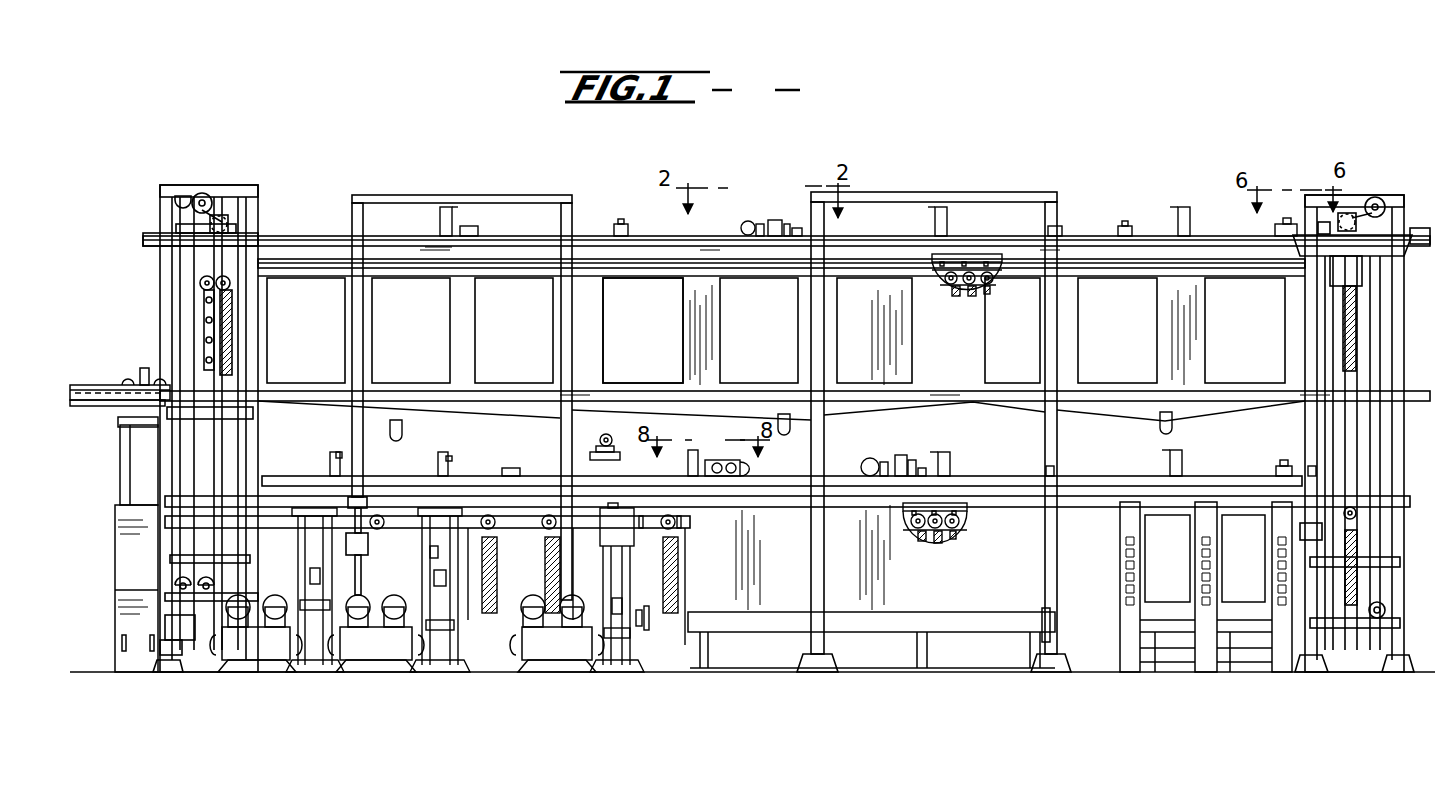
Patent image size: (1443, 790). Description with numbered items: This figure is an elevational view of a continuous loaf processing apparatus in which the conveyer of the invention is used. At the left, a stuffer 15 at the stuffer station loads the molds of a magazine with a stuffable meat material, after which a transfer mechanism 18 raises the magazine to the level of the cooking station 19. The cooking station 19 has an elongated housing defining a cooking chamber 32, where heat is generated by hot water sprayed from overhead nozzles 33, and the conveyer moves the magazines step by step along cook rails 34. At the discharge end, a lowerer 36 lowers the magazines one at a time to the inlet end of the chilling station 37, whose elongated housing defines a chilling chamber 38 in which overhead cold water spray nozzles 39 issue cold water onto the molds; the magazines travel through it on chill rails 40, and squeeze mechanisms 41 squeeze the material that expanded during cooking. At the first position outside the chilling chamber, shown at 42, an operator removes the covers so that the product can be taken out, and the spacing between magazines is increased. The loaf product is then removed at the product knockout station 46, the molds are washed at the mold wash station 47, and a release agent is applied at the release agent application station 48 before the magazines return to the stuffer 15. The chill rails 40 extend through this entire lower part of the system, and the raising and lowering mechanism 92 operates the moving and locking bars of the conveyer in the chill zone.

The stuffer 15 is at (132, 576).
The transfer mechanism 18 is at (217, 184).
The cooking station 19 is at (589, 290).
The cooking chamber 32 is at (954, 296).
The overhead nozzles 33 is at (955, 258).
The cook rails 34 is at (988, 294).
The lowerer 36 is at (1366, 200).
The chilling station 37 is at (990, 598).
The chilling chamber 38 is at (956, 506).
The overhead cold water spray nozzles 39 is at (910, 532).
The chill rails 40 is at (950, 540).
The squeeze mechanisms 41 is at (1128, 655).
The first position outside the chilling chamber 42 is at (674, 617).
The product knockout station 46 is at (612, 672).
The mold wash station 47 is at (437, 636).
The release agent application station 48 is at (312, 664).
The raising and lowering mechanism 92 is at (900, 460).